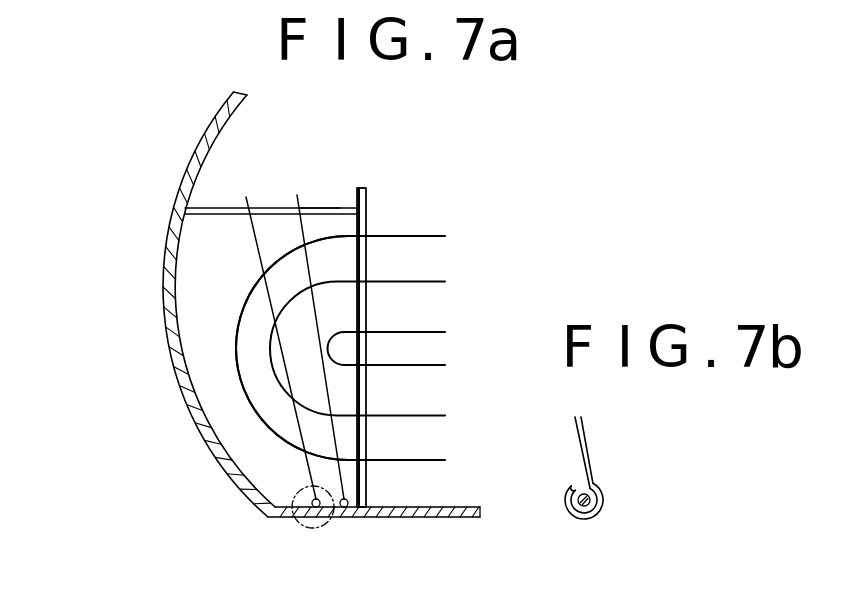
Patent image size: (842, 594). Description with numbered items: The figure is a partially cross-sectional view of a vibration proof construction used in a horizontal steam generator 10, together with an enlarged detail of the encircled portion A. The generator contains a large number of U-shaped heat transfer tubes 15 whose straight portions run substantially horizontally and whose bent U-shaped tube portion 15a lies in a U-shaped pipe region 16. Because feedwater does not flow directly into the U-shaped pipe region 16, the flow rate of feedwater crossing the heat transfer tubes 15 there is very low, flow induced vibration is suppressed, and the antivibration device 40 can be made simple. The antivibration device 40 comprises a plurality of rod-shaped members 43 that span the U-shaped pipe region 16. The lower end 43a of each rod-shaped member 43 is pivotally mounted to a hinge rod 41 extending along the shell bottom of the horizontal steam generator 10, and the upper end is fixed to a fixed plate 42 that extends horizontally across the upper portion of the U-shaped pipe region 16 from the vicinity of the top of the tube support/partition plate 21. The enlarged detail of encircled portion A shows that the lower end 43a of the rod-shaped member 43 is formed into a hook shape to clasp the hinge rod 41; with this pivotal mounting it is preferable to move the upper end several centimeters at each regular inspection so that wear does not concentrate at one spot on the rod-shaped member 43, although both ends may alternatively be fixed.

In FIG. 7a, the horizontal steam generator 10 is at (212, 467).
In FIG. 7a, the heat transfer tubes 15 is at (420, 237).
In FIG. 7a, the U-shaped tube portion 15a is at (236, 370).
In FIG. 7a, the U-shaped pipe region 16 is at (193, 226).
In FIG. 7a, the tube support/partition plate 21 is at (366, 196).
In FIG. 7a, the antivibration device 40 is at (235, 233).
In FIG. 7b, the hinge rod 41 is at (594, 500).
In FIG. 7a, the fixed plate 42 is at (322, 206).
In FIG. 7a, the rod-shaped member 43 is at (300, 230).
In FIG. 7b, the rod-shaped member 43 is at (589, 441).
In FIG. 7b, the lower end 43a is at (569, 487).
In FIG. 7a, the encircled portion A is at (293, 534).